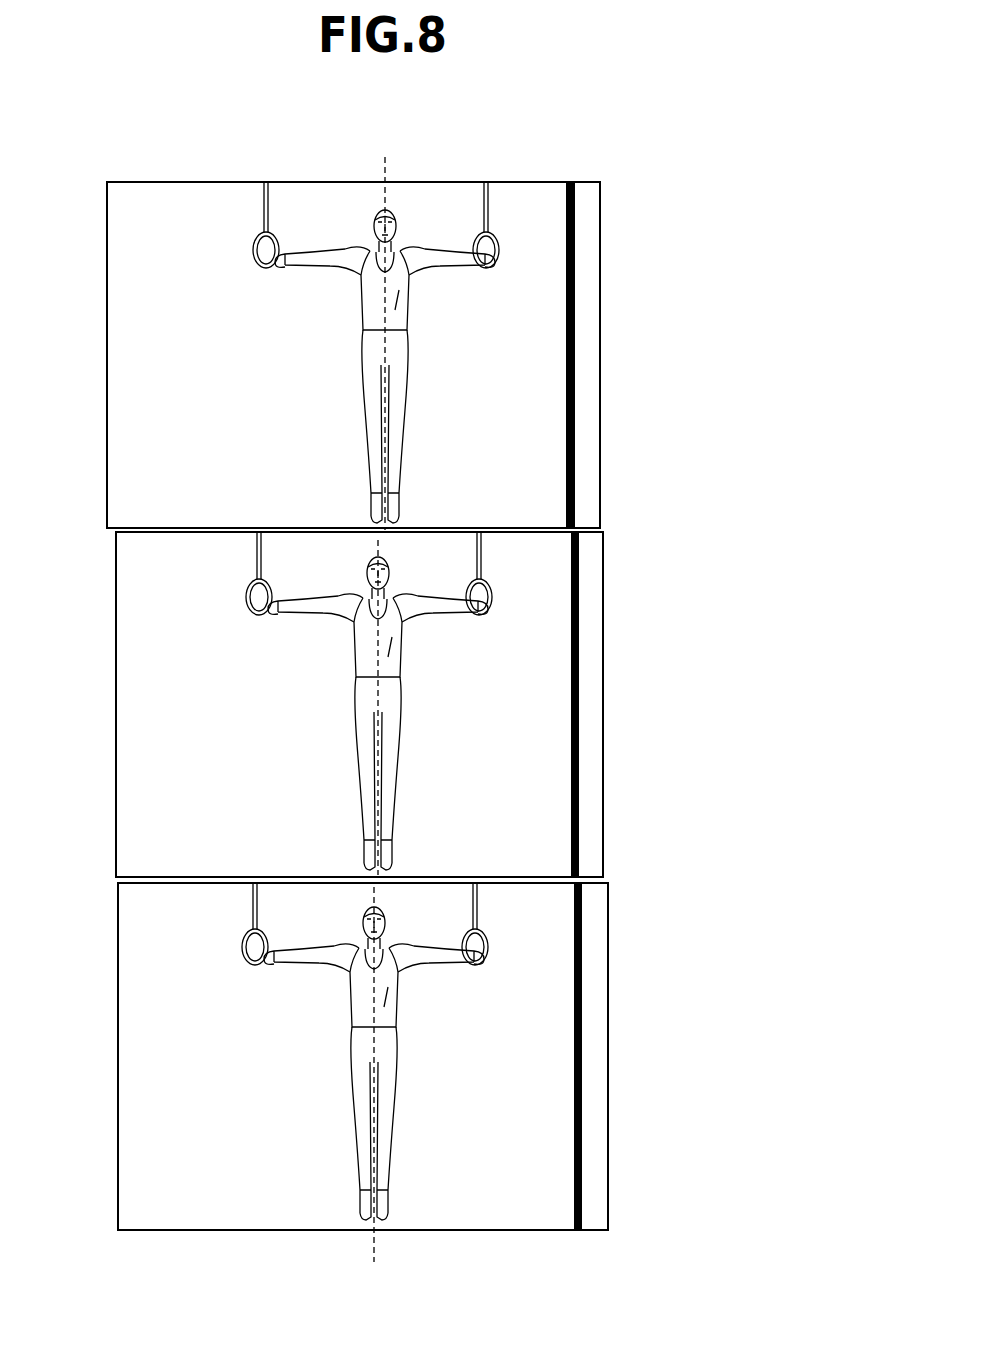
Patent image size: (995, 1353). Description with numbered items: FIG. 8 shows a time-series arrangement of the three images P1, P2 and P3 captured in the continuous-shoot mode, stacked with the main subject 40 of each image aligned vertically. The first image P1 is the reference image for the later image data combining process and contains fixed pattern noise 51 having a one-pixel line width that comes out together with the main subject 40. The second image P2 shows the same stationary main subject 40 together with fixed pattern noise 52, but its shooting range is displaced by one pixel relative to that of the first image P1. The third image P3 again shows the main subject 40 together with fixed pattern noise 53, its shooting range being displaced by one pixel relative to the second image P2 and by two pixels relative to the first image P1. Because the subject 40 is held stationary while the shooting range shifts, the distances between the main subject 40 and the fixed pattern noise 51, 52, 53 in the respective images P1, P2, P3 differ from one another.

The main subject 40 is at (364, 398).
The fixed pattern noise 51 is at (575, 423).
The fixed pattern noise 52 is at (579, 773).
The fixed pattern noise 53 is at (582, 1124).
The first image P1 is at (600, 315).
The second image P2 is at (603, 663).
The third image P3 is at (608, 1012).